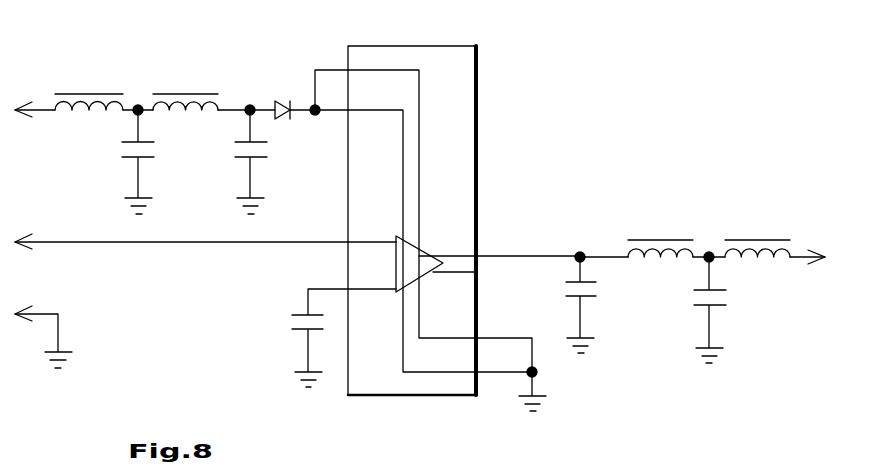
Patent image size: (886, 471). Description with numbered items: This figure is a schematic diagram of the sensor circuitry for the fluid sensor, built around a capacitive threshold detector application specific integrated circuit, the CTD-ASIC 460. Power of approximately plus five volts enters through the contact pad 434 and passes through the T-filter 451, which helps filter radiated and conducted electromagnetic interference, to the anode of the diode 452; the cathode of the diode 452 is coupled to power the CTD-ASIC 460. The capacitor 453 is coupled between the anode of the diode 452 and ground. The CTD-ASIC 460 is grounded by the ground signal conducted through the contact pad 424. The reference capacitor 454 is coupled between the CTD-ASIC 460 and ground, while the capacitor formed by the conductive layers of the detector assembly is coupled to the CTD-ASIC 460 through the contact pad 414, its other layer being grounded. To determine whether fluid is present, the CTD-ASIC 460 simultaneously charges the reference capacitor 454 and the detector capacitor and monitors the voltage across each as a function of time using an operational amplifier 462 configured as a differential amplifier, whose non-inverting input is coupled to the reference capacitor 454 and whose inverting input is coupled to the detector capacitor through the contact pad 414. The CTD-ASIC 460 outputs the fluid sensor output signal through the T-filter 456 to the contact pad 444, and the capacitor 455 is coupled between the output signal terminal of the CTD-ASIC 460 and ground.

The contact pad 414 is at (25, 247).
The contact pad 424 is at (25, 322).
The contact pad 434 is at (20, 117).
The contact pad 444 is at (810, 247).
The T-filter 451 is at (150, 67).
The diode 452 is at (284, 100).
The capacitor 453 is at (258, 162).
The reference capacitor 454 is at (300, 313).
The capacitor 455 is at (590, 277).
The T-filter 456 is at (704, 214).
The capacitive threshold detector application specific integrated circuit 460 is at (477, 100).
The operational amplifier 462 is at (413, 268).